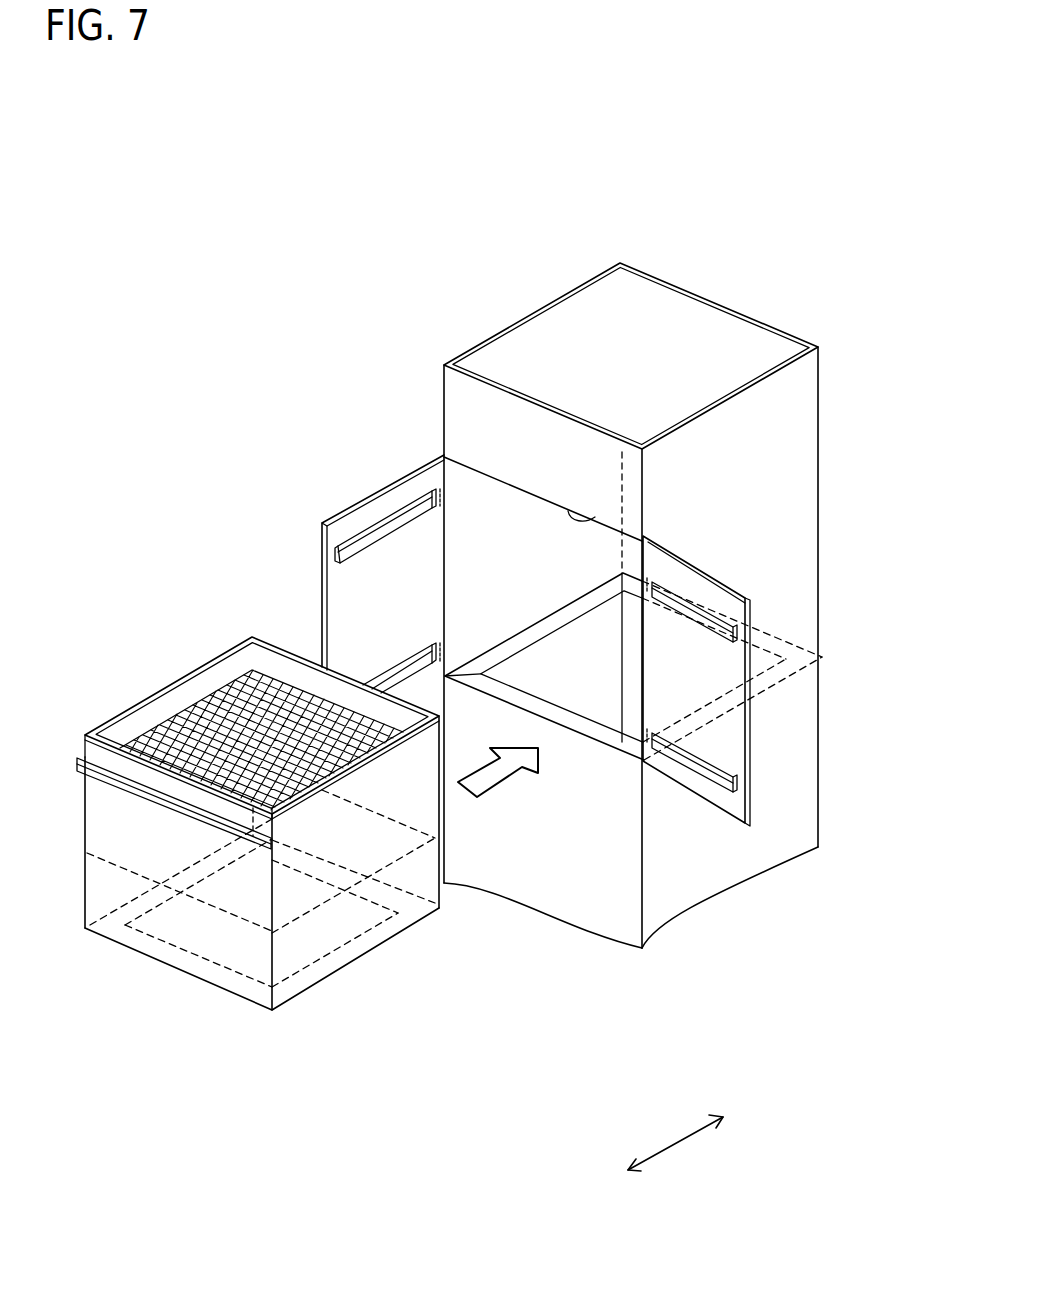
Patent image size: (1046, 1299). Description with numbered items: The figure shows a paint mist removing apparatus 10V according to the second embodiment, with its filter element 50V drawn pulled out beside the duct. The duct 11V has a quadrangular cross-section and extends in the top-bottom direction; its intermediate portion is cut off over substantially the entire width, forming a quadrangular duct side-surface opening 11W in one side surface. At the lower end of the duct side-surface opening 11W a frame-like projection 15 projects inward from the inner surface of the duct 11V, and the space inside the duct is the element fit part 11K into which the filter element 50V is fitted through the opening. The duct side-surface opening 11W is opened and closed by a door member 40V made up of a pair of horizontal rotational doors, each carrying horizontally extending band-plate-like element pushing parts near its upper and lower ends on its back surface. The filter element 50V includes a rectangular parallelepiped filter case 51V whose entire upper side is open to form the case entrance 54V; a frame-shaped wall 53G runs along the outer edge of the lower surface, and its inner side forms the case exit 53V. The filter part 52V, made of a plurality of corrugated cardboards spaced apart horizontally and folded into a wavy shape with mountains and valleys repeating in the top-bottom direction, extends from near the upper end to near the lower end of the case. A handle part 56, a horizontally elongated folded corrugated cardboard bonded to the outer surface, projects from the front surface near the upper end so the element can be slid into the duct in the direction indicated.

The paint mist removing apparatus 10V is at (345, 212).
The duct 11V is at (792, 484).
The element fit part 11K is at (462, 487).
The duct side-surface opening 11W is at (601, 518).
The frame-like projection 15 is at (596, 744).
The door member 40V is at (335, 497).
The filter element 50V is at (180, 668).
The filter case 51V is at (122, 710).
The filter part 52V is at (215, 702).
The case exit 53V is at (343, 968).
The frame-shaped wall 53G is at (398, 940).
The case entrance 54V is at (103, 723).
The handle part 56 is at (78, 773).